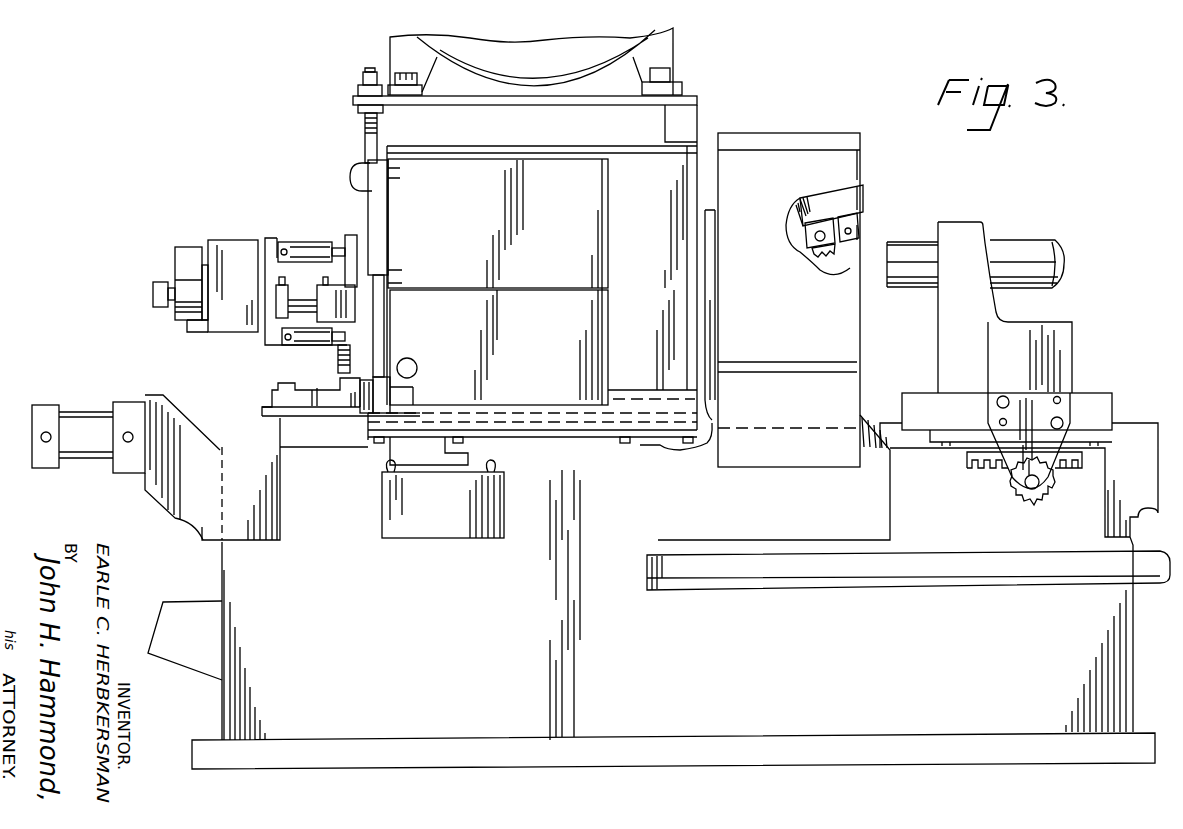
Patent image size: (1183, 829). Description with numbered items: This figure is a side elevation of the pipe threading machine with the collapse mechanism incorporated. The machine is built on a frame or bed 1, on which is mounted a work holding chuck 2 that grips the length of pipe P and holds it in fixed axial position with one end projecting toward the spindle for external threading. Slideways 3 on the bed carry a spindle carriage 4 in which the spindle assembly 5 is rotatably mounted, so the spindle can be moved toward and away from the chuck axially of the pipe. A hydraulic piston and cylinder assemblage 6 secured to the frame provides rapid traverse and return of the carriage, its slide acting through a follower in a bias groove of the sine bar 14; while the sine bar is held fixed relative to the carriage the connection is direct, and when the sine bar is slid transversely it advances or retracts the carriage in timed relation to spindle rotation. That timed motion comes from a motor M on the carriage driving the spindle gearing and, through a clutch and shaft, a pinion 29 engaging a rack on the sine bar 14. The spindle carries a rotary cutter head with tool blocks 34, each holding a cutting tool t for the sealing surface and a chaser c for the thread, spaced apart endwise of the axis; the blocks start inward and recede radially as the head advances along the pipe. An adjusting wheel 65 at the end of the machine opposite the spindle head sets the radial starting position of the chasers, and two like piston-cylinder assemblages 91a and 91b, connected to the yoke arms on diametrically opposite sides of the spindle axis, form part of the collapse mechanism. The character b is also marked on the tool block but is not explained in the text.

The frame or bed 1 is at (659, 592).
The work holding chuck 2 is at (967, 222).
The slideways 3 is at (570, 420).
The spindle carriage 4 is at (523, 240).
The spindle assembly 5 is at (712, 200).
The hydraulic piston and cylinder assemblage 6 is at (84, 408).
The sine bar 14 is at (300, 378).
The pinion 29 is at (338, 358).
The tool block 34 is at (843, 200).
The adjusting wheel 65 is at (185, 262).
The assemblage 91a is at (300, 237).
The assemblage 91b is at (295, 340).
The motor M is at (402, 47).
The pipe P is at (1036, 240).
The tool clamp block b is at (807, 247).
The chaser c is at (820, 260).
The cutting tool t is at (850, 253).